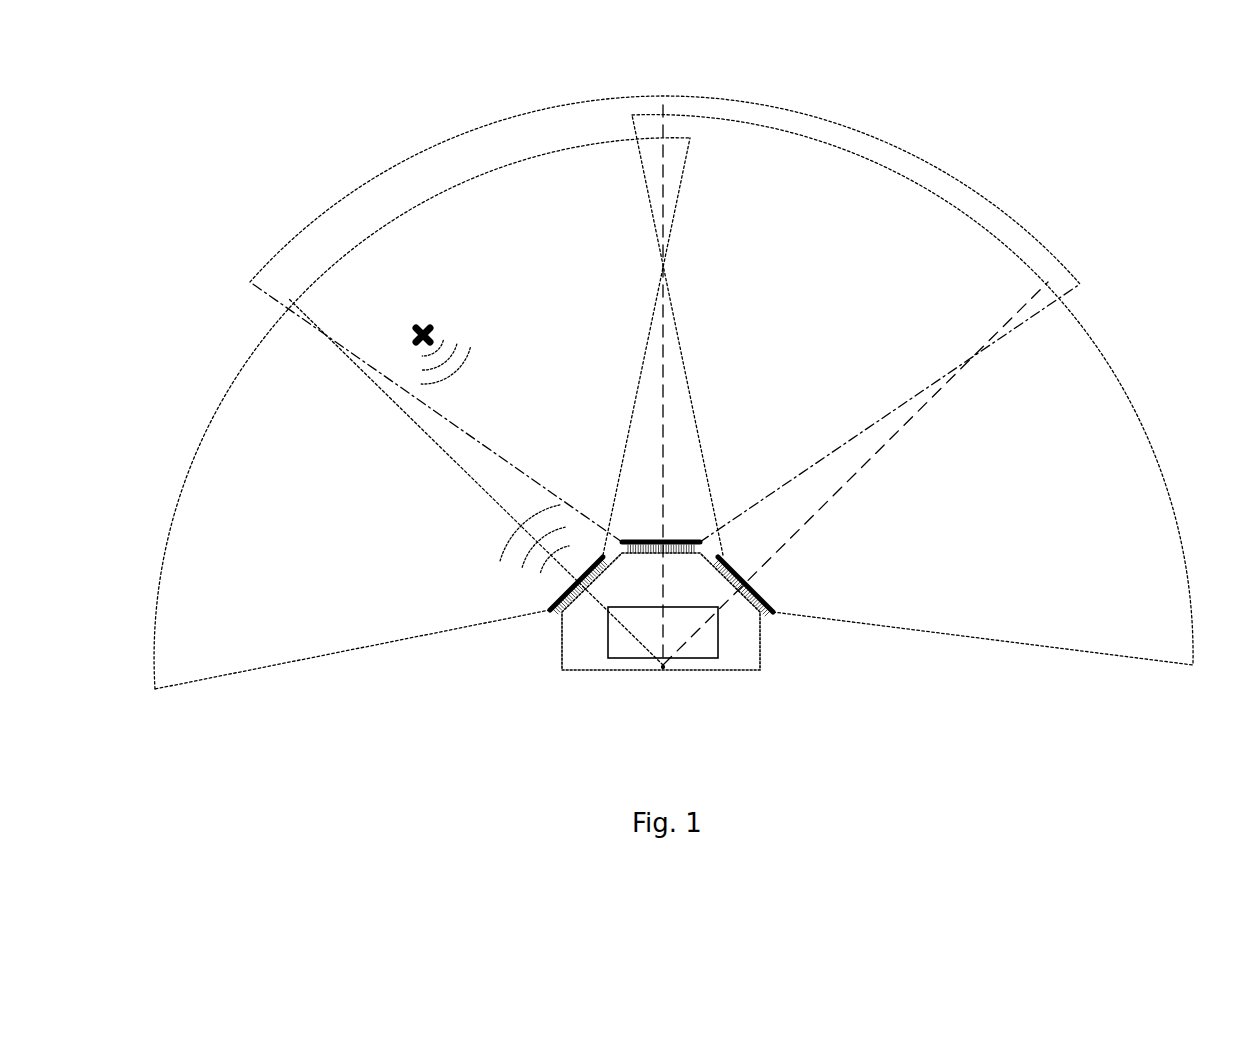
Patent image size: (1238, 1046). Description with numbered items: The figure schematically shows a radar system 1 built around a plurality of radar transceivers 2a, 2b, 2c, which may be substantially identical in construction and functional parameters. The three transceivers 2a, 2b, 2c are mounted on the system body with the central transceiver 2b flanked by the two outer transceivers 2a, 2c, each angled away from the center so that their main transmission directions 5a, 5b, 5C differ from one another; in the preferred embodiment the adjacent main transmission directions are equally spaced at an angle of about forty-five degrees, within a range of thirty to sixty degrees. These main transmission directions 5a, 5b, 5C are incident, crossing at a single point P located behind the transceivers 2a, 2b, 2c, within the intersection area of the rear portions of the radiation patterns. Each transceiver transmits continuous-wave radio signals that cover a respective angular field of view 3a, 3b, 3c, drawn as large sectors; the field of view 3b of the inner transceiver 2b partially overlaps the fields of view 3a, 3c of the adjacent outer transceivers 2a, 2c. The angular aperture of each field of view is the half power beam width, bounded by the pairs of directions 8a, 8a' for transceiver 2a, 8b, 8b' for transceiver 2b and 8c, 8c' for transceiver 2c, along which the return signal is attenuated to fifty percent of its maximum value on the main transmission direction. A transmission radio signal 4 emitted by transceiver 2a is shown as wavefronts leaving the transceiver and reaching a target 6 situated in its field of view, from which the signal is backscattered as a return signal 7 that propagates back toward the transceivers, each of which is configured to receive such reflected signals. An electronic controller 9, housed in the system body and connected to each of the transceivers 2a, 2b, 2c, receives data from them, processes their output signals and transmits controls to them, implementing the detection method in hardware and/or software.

The radar system 1 is at (793, 665).
The transceiver 2a is at (546, 615).
The transceiver 2b is at (697, 541).
The transceiver 2c is at (765, 603).
The angular field of view 3a is at (220, 590).
The angular field of view 3b is at (457, 164).
The angular field of view 3c is at (1117, 445).
The transmission radio signal 4 is at (495, 545).
The main transmission direction 5a is at (405, 413).
The main transmission direction 5b is at (668, 347).
The main transmission direction 5C is at (858, 468).
The target 6 is at (426, 323).
The return signal 7 is at (470, 370).
The direction delimiting the aperture angle 8a is at (352, 659).
The direction delimiting the aperture angle 8a' is at (688, 346).
The direction delimiting the aperture angle 8b is at (407, 412).
The direction delimiting the aperture angle 8b' is at (892, 413).
The direction delimiting the aperture angle 8c is at (647, 335).
The direction delimiting the aperture angle 8c' is at (983, 666).
The electronic controller 9 is at (622, 658).
The crossing point P is at (663, 670).